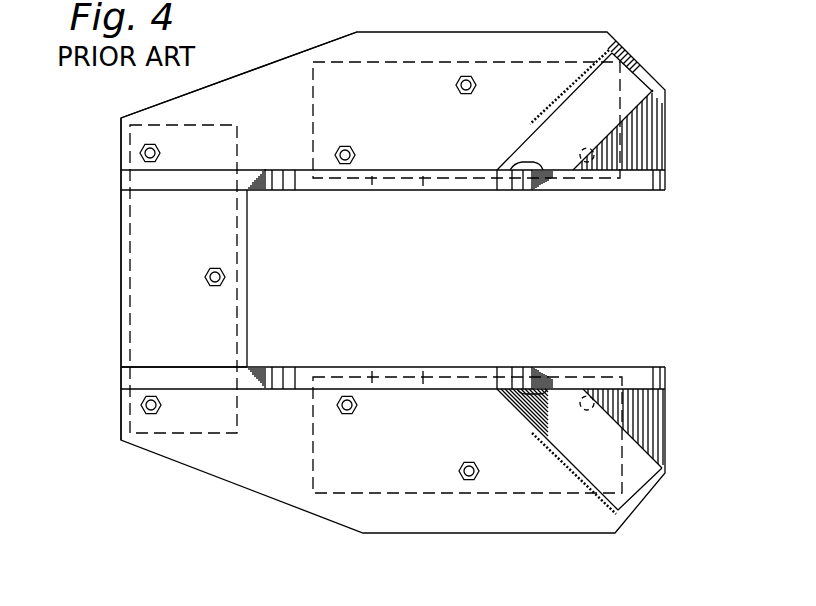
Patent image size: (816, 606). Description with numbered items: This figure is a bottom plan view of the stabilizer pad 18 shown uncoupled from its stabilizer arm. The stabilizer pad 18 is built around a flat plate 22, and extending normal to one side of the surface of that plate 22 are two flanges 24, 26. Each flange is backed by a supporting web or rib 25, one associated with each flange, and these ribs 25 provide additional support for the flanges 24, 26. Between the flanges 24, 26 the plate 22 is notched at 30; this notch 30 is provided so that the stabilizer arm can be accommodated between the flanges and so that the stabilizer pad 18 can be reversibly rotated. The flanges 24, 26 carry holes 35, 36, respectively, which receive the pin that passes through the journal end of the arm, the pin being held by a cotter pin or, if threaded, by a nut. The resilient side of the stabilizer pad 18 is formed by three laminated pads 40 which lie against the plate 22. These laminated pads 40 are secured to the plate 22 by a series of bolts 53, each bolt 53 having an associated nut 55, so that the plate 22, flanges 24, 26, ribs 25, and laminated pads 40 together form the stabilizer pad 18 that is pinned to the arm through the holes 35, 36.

The stabilizer pad 18 is at (200, 480).
The flat plate 22 is at (274, 82).
The flange 24 is at (182, 190).
The flange 26 is at (188, 367).
The supporting web or rib 25 is at (609, 75).
The notch 30 is at (594, 299).
The hole 35 is at (423, 180).
The hole 36 is at (422, 376).
The laminated pads 40 is at (544, 62).
The bolt 53 is at (354, 154).
The nut 55 is at (467, 95).